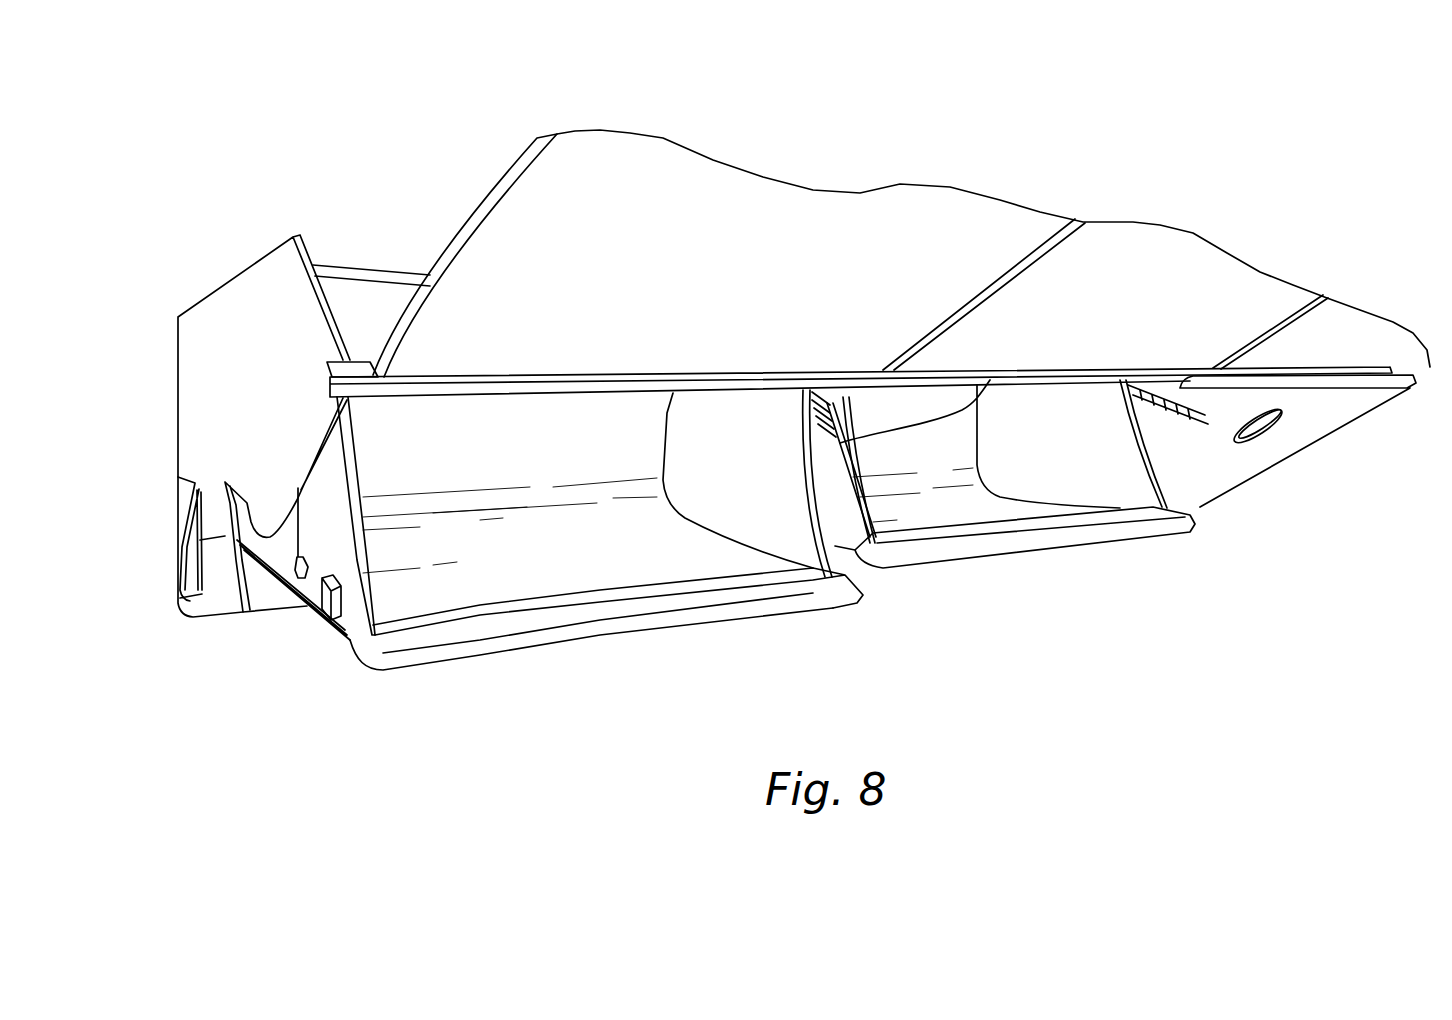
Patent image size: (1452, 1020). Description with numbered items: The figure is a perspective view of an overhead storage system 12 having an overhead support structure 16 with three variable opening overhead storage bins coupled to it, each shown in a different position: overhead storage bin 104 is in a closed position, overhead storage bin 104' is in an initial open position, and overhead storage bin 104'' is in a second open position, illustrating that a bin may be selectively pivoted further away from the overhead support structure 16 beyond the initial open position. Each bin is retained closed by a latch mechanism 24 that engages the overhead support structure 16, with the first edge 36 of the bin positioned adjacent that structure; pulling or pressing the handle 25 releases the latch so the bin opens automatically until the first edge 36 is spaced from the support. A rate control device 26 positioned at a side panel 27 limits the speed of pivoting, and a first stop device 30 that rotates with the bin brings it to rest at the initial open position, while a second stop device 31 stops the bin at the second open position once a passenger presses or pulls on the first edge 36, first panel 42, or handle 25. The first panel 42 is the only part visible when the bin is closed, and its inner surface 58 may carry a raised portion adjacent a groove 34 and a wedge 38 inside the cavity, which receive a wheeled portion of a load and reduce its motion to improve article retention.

The overhead storage system 12 is at (1133, 165).
The overhead support structure 16 is at (200, 353).
The latch mechanism 24 is at (1265, 440).
The handle 25 is at (1247, 438).
The rate control device 26 is at (291, 587).
The side panel 27 is at (1040, 430).
The first stop device 30 is at (328, 600).
The second stop device 31 is at (280, 553).
The groove 34 is at (773, 577).
The first edge 36 is at (1332, 381).
The wedge 38 is at (432, 470).
The first panel 42 is at (381, 652).
The inner surface 58 is at (509, 570).
The variable opening overhead storage bin 104 is at (1375, 498).
The overhead storage bin 104' is at (1128, 594).
The overhead storage bin 104'' is at (560, 703).